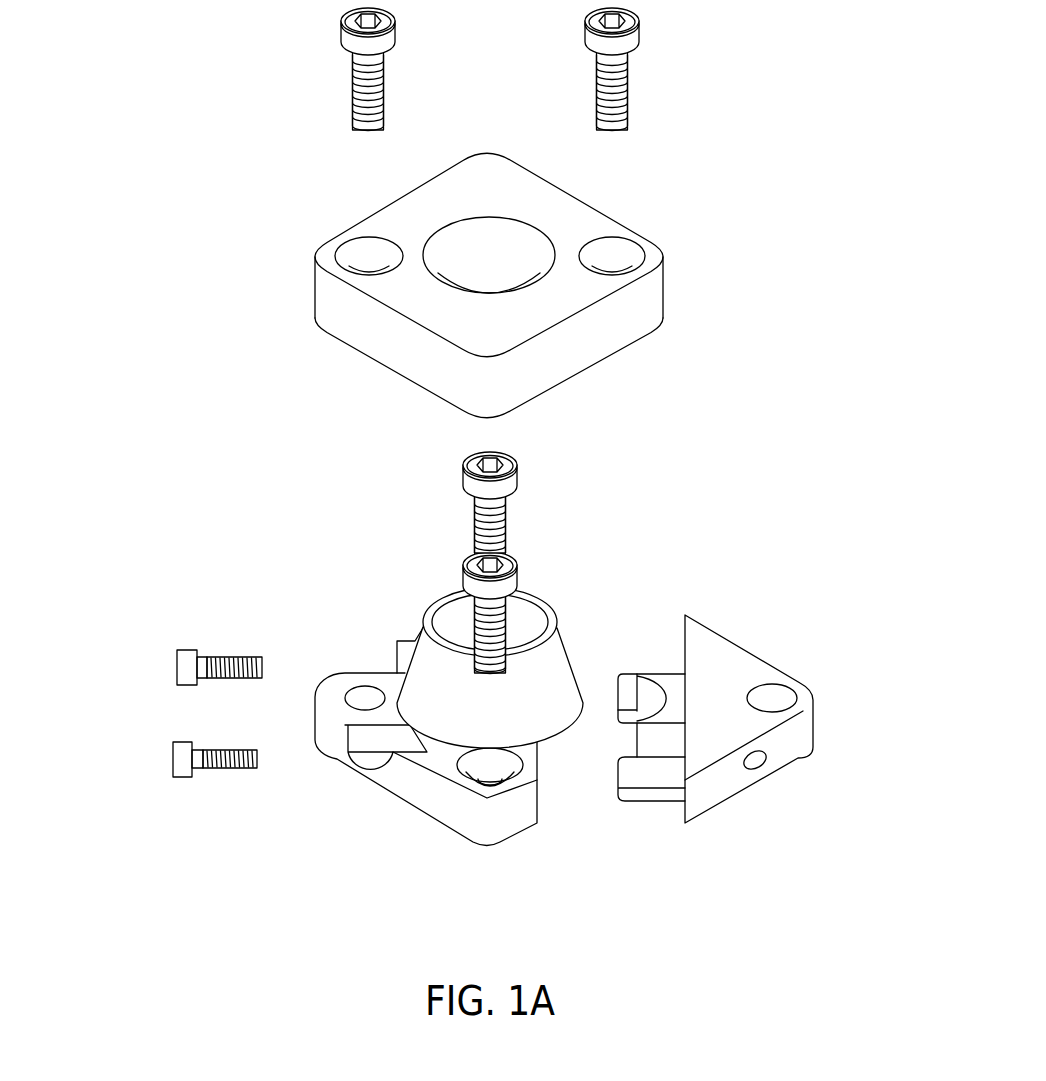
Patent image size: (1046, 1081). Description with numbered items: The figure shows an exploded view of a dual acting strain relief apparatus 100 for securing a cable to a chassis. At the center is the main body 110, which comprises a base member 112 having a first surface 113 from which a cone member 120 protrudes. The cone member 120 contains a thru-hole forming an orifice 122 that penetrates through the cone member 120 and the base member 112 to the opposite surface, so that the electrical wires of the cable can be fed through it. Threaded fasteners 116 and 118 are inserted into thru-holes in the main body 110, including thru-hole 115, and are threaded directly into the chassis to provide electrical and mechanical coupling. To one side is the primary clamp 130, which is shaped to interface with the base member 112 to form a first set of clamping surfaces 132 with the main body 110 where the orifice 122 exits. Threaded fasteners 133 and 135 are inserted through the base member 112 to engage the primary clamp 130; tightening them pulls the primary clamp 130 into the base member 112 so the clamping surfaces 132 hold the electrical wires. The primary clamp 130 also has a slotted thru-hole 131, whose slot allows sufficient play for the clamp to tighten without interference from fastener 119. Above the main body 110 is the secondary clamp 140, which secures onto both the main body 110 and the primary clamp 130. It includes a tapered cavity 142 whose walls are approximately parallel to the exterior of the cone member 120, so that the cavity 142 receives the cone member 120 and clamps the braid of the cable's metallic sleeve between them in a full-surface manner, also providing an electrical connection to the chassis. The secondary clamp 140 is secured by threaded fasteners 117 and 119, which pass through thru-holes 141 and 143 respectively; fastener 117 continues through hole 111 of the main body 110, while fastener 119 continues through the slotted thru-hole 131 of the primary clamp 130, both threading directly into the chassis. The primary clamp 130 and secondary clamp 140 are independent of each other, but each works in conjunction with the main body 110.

The dual acting strain relief apparatus 100 is at (812, 188).
The main body 110 is at (384, 737).
The hole 111 is at (358, 692).
The base member 112 is at (425, 813).
The first surface 113 is at (383, 675).
The thru-hole 115 is at (498, 785).
The threaded fastener 116 is at (518, 476).
The secondary clamp threaded fastener 117 is at (396, 33).
The threaded fastener 118 is at (518, 575).
The secondary clamp threaded fastener 119 is at (640, 33).
The cone member 120 is at (511, 650).
The orifice 122 is at (450, 615).
The primary clamp 130 is at (711, 697).
The slotted thru-hole 131 is at (780, 693).
The first set of clamping surfaces 132 is at (621, 735).
The threaded fastener 133 is at (172, 757).
The threaded fastener 135 is at (176, 665).
The secondary clamp 140 is at (473, 271).
The thru-hole 141 is at (350, 257).
The tapered cavity 142 is at (517, 237).
The thru-hole 143 is at (618, 257).